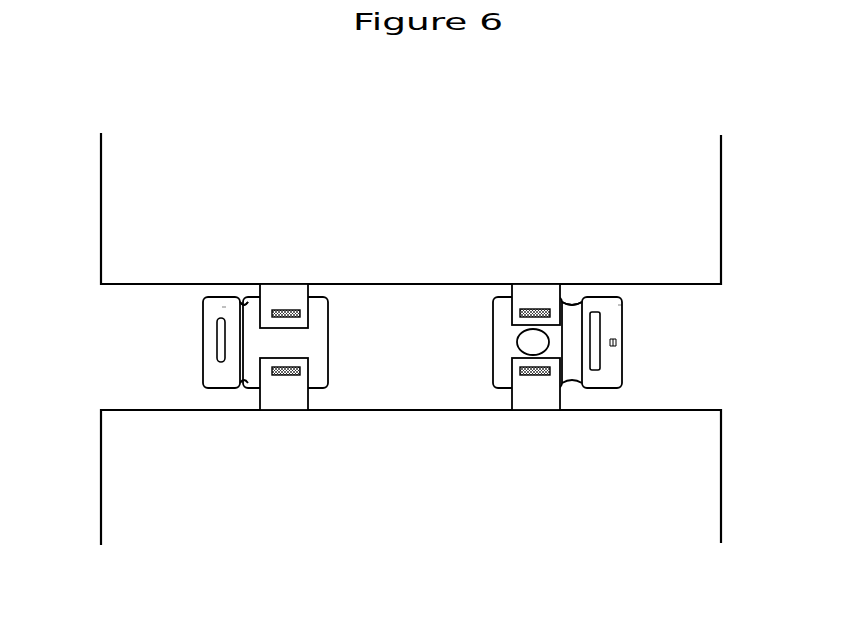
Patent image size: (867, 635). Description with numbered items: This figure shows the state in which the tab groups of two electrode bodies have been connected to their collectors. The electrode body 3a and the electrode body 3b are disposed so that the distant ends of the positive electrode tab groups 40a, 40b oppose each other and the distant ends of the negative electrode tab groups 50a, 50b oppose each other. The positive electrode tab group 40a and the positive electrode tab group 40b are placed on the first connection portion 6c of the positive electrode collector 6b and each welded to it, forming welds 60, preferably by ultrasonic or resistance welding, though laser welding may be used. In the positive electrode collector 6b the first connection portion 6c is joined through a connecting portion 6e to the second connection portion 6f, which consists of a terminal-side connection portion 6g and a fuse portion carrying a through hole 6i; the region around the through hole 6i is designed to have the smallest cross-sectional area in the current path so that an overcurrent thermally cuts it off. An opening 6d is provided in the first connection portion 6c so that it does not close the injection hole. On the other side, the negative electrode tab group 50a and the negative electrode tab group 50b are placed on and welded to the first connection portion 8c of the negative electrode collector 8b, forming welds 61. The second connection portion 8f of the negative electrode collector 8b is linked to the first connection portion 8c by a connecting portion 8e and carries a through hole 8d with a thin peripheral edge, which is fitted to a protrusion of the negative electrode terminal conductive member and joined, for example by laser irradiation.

The electrode body 3a is at (680, 240).
The electrode body 3b is at (686, 488).
The positive electrode collector 6b is at (630, 382).
The first connection portion 6c is at (510, 330).
The opening 6d is at (518, 342).
The connecting portion 6e is at (583, 300).
The second connection portion 6f is at (622, 305).
The terminal-side connection portion 6g is at (603, 325).
The through hole 6i is at (600, 355).
The negative electrode collector 8b is at (195, 371).
The first connection portion 8c is at (295, 343).
The through hole 8d is at (215, 342).
The neck portion of second terminal 8e is at (243, 298).
The second connection portion 8f is at (222, 307).
The positive electrode tab group 40a is at (532, 300).
The positive electrode tab group 40b is at (533, 387).
The negative electrode tab group 50a is at (283, 300).
The negative electrode tab group 50b is at (285, 395).
The weld 60 is at (520, 312).
The weld 61 is at (300, 313).